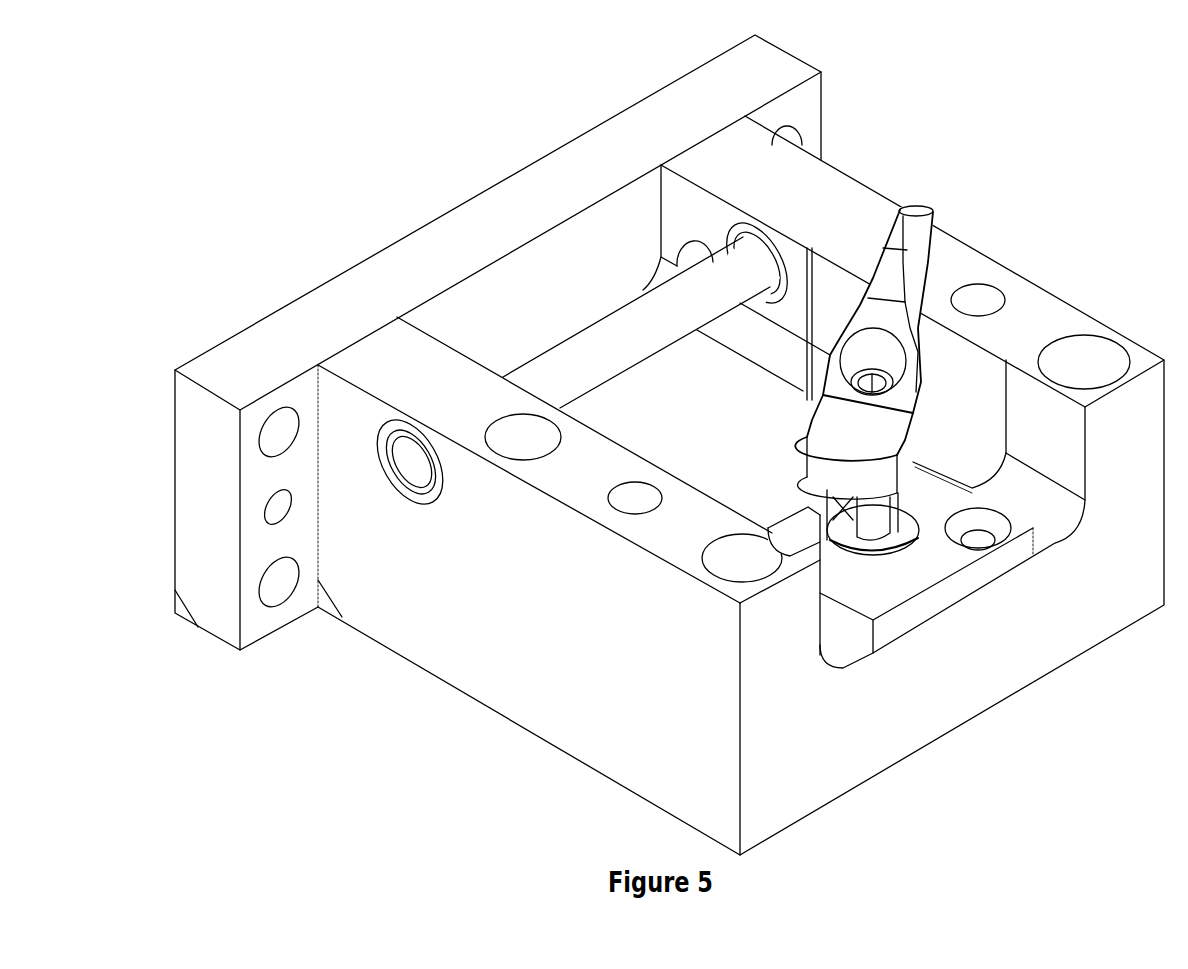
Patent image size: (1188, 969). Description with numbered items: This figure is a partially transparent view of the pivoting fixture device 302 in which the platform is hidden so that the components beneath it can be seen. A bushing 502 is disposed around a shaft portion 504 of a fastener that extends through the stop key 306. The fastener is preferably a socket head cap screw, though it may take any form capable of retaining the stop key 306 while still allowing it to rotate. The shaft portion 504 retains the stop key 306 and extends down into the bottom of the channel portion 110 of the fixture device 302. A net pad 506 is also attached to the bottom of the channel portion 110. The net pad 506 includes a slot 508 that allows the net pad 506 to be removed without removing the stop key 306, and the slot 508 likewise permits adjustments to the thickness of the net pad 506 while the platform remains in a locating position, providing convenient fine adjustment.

The pivoting fixture device 302 is at (872, 120).
The channel portion 110 is at (713, 405).
The stop key 306 is at (900, 348).
The shaft portion 504 is at (870, 512).
The net pad 506 is at (902, 577).
The slot 508 is at (813, 507).
The bushing 502 is at (837, 533).